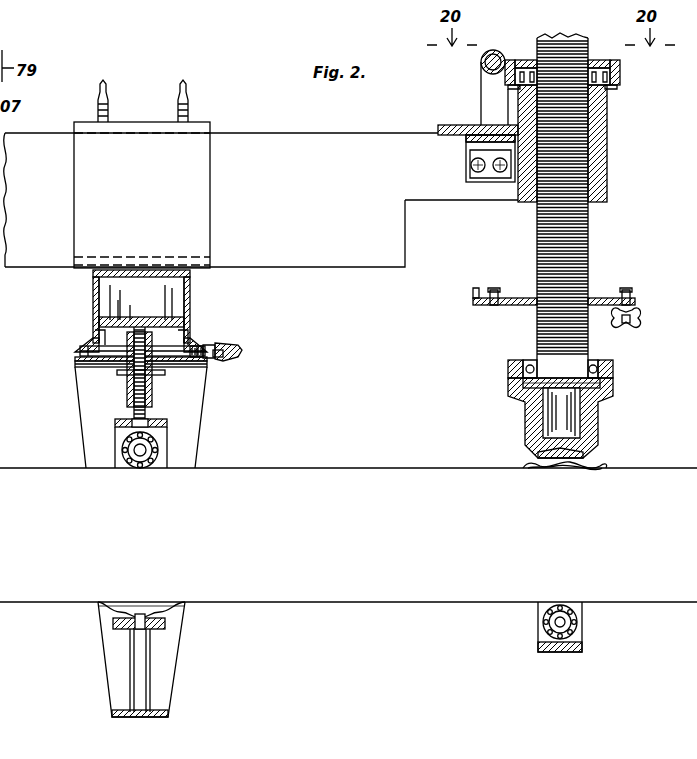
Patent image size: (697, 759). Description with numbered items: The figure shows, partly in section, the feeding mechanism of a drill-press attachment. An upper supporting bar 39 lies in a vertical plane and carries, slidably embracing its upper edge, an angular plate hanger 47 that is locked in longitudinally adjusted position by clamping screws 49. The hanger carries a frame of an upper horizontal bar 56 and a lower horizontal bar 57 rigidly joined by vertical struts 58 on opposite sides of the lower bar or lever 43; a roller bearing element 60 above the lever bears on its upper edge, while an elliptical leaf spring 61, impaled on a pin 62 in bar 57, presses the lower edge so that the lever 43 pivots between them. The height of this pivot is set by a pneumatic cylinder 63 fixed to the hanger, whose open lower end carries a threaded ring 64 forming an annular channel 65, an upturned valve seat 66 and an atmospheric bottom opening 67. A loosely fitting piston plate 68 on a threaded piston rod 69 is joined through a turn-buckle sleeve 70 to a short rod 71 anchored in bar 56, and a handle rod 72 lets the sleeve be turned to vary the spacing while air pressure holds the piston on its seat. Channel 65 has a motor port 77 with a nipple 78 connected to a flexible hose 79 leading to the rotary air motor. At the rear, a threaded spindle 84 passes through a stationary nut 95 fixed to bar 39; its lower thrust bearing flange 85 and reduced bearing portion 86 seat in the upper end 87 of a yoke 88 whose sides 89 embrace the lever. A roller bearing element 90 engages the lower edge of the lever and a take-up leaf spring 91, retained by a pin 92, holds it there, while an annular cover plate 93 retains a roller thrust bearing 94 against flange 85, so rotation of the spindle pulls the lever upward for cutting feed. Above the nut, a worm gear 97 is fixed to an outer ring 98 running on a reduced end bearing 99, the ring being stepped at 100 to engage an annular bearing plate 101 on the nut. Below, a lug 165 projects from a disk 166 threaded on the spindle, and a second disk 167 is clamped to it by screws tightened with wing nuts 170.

The upper supporting bar 39 is at (293, 133).
The lower bar or lever 43 is at (338, 468).
The angular plate hanger 47 is at (97, 170).
The clamping screws 49 is at (180, 95).
The horizontal bar 56 is at (160, 424).
The horizontal bar 57 is at (170, 628).
The vertical struts 58 is at (167, 447).
The roller bearing element 60 is at (122, 450).
The elliptical leaf spring 61 is at (100, 612).
The pin 62 is at (130, 638).
The cylinder 63 is at (93, 298).
The ring 64 is at (82, 346).
The annular passage or channel 65 is at (90, 351).
The upwardly turned portion 66 is at (96, 359).
The circular bottom opening 67 is at (105, 364).
The piston plate 68 is at (158, 318).
The threaded piston rod 69 is at (150, 333).
The turn-buckle sleeve 70 is at (152, 385).
The short rod 71 is at (150, 411).
The handle rod 72 is at (120, 376).
The port opening 77 is at (204, 346).
The nipple 78 is at (220, 358).
The flexible hose 79 is at (240, 353).
The threaded spindle 84 is at (589, 236).
The thrust bearing flange 85 is at (590, 392).
The reduced bearing portion 86 is at (566, 418).
The upper end of yoke 87 is at (528, 420).
The yoke 88 is at (531, 656).
The yoke sides 89 is at (582, 621).
The roller bearing element 90 is at (573, 633).
The take-up leaf spring 91 is at (588, 466).
The pin 92 is at (598, 443).
The annular cover plate 93 is at (600, 362).
The roller thrust bearing 94 is at (613, 382).
The stationary nut 95 is at (607, 137).
The worm gear 97 is at (597, 60).
The outer ring 98 is at (612, 76).
The reduced end bearing 99 is at (616, 86).
The stepped interior 100 is at (505, 82).
The annular bearing plate 101 is at (515, 60).
The lug 165 is at (476, 288).
The disk 166 is at (521, 305).
The second disk 167 is at (611, 298).
The wing nuts 170 is at (641, 318).